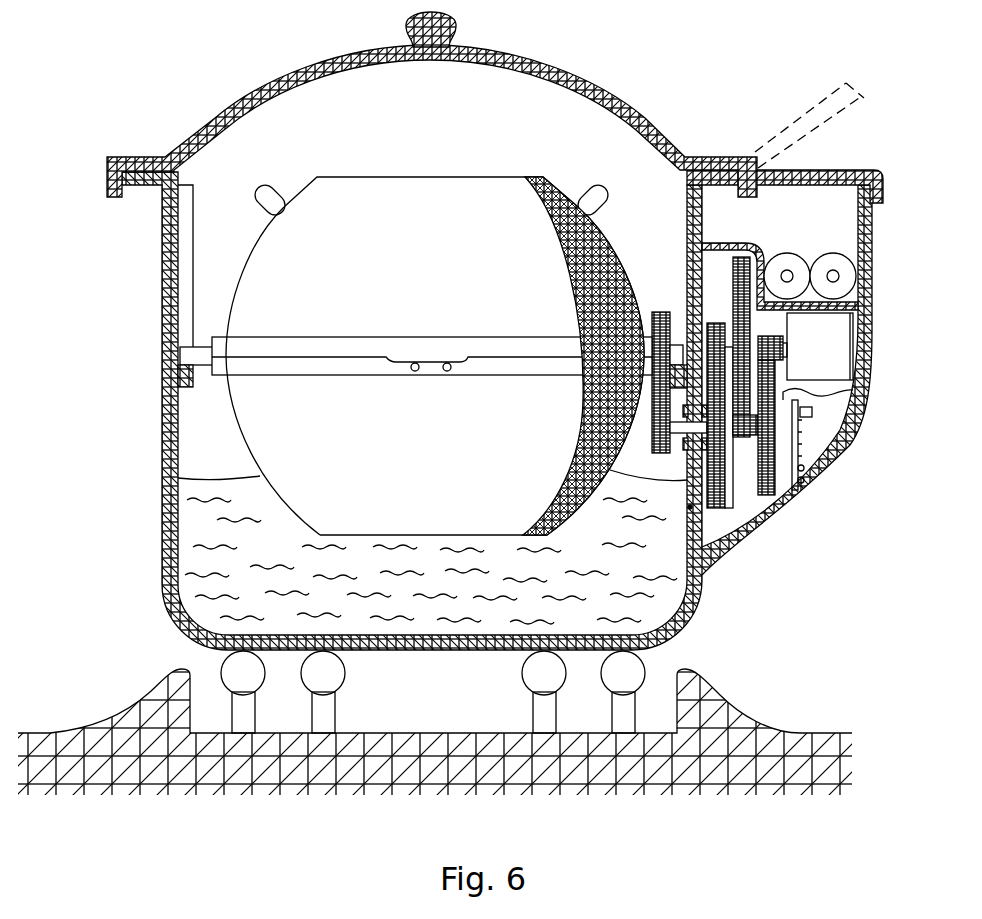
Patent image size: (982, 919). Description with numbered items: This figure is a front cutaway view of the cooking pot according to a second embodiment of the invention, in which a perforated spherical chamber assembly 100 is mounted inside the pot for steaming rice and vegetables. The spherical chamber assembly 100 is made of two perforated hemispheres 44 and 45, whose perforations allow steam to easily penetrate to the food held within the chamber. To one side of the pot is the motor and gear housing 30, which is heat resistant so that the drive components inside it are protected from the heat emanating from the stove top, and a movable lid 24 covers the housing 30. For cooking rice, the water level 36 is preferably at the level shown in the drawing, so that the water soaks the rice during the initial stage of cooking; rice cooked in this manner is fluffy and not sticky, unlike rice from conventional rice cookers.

The spherical chamber assembly 100 is at (377, 170).
The perforated hemisphere 44 is at (613, 247).
The perforated hemisphere 45 is at (237, 441).
The movable lid 24 is at (870, 170).
The motor and gear housing 30 is at (853, 448).
The water level 36 is at (667, 603).